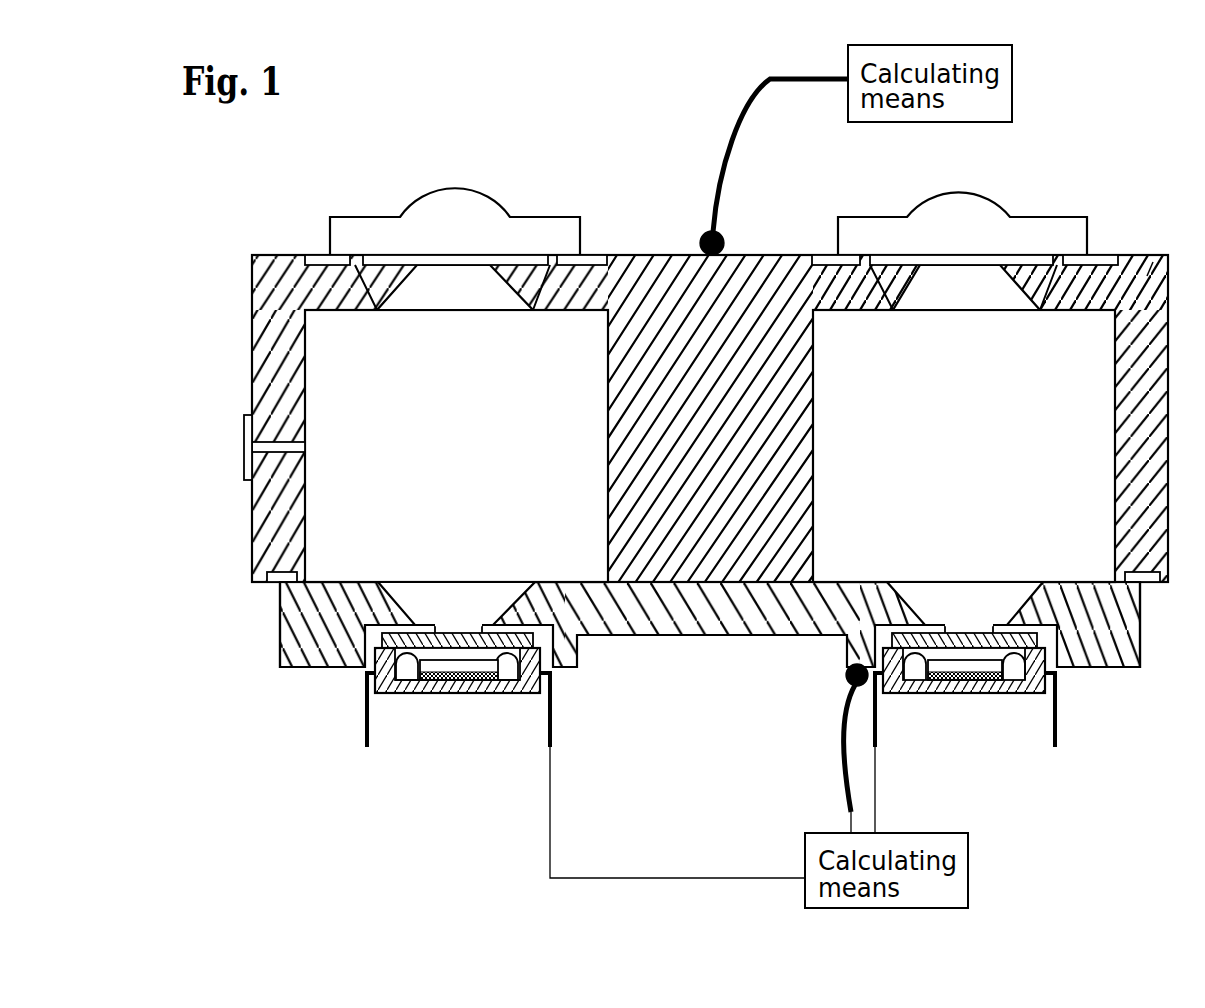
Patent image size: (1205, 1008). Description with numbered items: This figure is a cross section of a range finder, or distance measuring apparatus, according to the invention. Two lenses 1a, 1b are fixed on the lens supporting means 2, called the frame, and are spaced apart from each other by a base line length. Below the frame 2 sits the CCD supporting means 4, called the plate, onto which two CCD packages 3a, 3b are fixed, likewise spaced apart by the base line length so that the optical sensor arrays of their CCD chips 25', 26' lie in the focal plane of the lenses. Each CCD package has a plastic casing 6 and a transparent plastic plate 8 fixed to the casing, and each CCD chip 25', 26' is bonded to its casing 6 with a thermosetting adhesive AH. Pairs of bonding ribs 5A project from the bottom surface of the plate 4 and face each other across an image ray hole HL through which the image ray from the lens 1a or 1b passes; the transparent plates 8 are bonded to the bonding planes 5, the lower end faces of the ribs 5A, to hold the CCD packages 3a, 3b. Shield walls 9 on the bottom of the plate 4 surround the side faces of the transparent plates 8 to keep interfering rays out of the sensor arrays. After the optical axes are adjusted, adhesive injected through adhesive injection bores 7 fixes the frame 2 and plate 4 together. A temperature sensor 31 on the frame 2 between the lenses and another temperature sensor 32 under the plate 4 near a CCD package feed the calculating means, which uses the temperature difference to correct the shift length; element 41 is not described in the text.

The lens 1a is at (476, 208).
The lens 1b is at (975, 205).
The lens supporting means 2 is at (1157, 249).
The CCD package 3a is at (497, 697).
The CCD package 3b is at (990, 693).
The CCD supporting means 4 is at (716, 608).
The bonding plane 5 is at (467, 630).
The bonding rib 5A is at (448, 627).
The plastic casing 6 is at (390, 693).
The adhesive injection bore 7 is at (318, 253).
The transparent plastic plate 8 is at (402, 638).
The shield wall 9 is at (302, 661).
The CCD chip 25' is at (459, 700).
The CCD chip 26' is at (965, 700).
The temperature sensor 31 is at (700, 237).
The temperature sensor 32 is at (843, 685).
The positioning member 41 is at (246, 441).
The thermosetting adhesive AH is at (480, 690).
The image ray hole HL is at (495, 602).